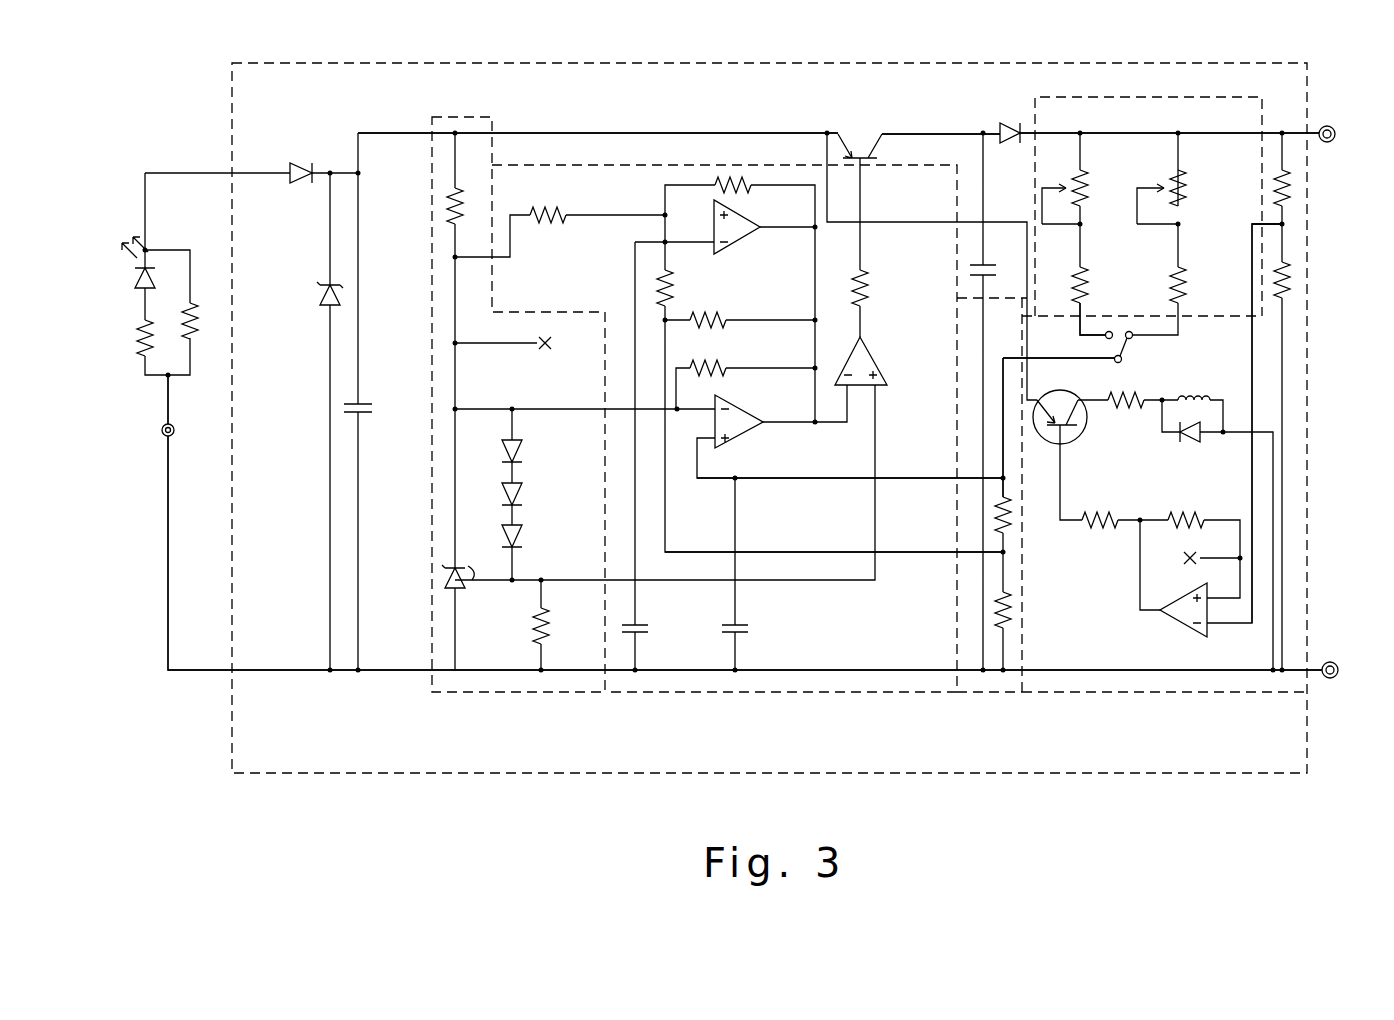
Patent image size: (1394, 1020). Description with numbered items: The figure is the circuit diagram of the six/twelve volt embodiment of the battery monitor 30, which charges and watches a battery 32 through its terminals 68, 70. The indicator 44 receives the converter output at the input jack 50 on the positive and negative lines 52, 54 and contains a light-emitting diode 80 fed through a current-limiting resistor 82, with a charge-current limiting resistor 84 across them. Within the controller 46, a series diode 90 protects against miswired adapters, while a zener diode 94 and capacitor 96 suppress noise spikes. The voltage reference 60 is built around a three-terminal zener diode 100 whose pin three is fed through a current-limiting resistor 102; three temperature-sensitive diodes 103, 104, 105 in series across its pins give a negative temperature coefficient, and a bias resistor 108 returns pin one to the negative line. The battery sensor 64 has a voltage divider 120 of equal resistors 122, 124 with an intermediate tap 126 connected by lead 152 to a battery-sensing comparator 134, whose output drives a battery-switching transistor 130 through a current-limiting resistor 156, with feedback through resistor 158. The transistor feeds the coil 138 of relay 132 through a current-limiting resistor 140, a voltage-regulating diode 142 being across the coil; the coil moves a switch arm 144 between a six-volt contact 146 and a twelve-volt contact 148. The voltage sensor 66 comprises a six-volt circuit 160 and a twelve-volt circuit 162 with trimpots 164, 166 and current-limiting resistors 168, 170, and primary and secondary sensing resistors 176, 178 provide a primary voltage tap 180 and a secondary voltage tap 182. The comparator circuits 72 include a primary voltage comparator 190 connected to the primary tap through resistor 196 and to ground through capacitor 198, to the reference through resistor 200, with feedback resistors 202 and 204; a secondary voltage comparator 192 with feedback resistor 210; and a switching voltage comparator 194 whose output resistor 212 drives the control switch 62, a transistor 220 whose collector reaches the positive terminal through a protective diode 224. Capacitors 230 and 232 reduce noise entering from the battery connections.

The monitor 30 is at (200, 70).
The battery 32 is at (1336, 194).
The indicator 44 is at (100, 222).
The controller 46 is at (612, 62).
The female input jack 50 is at (162, 434).
The positive line 52 is at (168, 385).
The negative line 54 is at (168, 600).
The voltage reference 60 is at (523, 697).
The control switch 62 is at (866, 120).
The battery sensor 64 is at (1121, 697).
The voltage sensor 66 is at (995, 697).
The positive terminal 68 is at (1337, 128).
The terminal 70 is at (1322, 660).
The comparator circuits 72 is at (727, 697).
The light-emitting diode 80 is at (140, 275).
The current-limiting resistor 82 is at (140, 325).
The charge-current limiting resistor 84 is at (198, 303).
The series diode 90 is at (305, 180).
The zener diode 94 is at (325, 285).
The capacitor 96 is at (365, 395).
The three-terminal zener diode 100 is at (466, 556).
The current-limiting resistor 102 is at (452, 190).
The temperature-sensitive diode 103 is at (522, 445).
The temperature-sensitive diode 104 is at (522, 488).
The temperature-sensitive diode 105 is at (522, 531).
The bias resistor 108 is at (541, 640).
The battery sensing voltage divider 120 is at (1276, 160).
The resistor 122 is at (1278, 192).
The resistor 124 is at (1288, 268).
The intermediate voltage tap 126 is at (1283, 225).
The battery-switching transistor 130 is at (1066, 445).
The relay 132 is at (1232, 417).
The battery-sensing comparator 134 is at (1190, 635).
The coil 138 is at (1203, 392).
The current-limiting resistor 140 is at (1122, 392).
The voltage-regulating diode 142 is at (1190, 442).
The switch arm 144 is at (1114, 352).
The 6-volt contact 146 is at (1128, 340).
The 12-volt contact 148 is at (1106, 330).
The lead 152 is at (1252, 355).
The current-limiting resistor 156 is at (1098, 508).
The resistor 158 is at (1185, 508).
The 6-volt circuit 160 is at (1220, 115).
The 12-volt circuit 162 is at (1058, 170).
The trimpot 164 is at (1182, 175).
The trimpot 166 is at (1050, 185).
The current-limiting resistor 168 is at (1183, 275).
The current-limiting resistor 170 is at (1083, 272).
The primary sensing resistor 176 is at (1000, 608).
The secondary sensing resistor 178 is at (1000, 512).
The primary voltage tap 180 is at (1003, 552).
The secondary voltage tap 182 is at (1003, 476).
The primary voltage comparator 190 is at (732, 210).
The secondary voltage comparator 192 is at (735, 405).
The switching voltage comparator 194 is at (866, 350).
The resistor 196 is at (658, 285).
The capacitor 198 is at (645, 625).
The resistor 200 is at (545, 225).
The resistor 202 is at (742, 185).
The resistor 204 is at (718, 320).
The feedback resistor 210 is at (718, 368).
The output resistor 212 is at (862, 270).
The transistor 220 is at (878, 150).
The diode 224 is at (1011, 124).
The capacitor 230 is at (978, 275).
The capacitor 232 is at (745, 625).